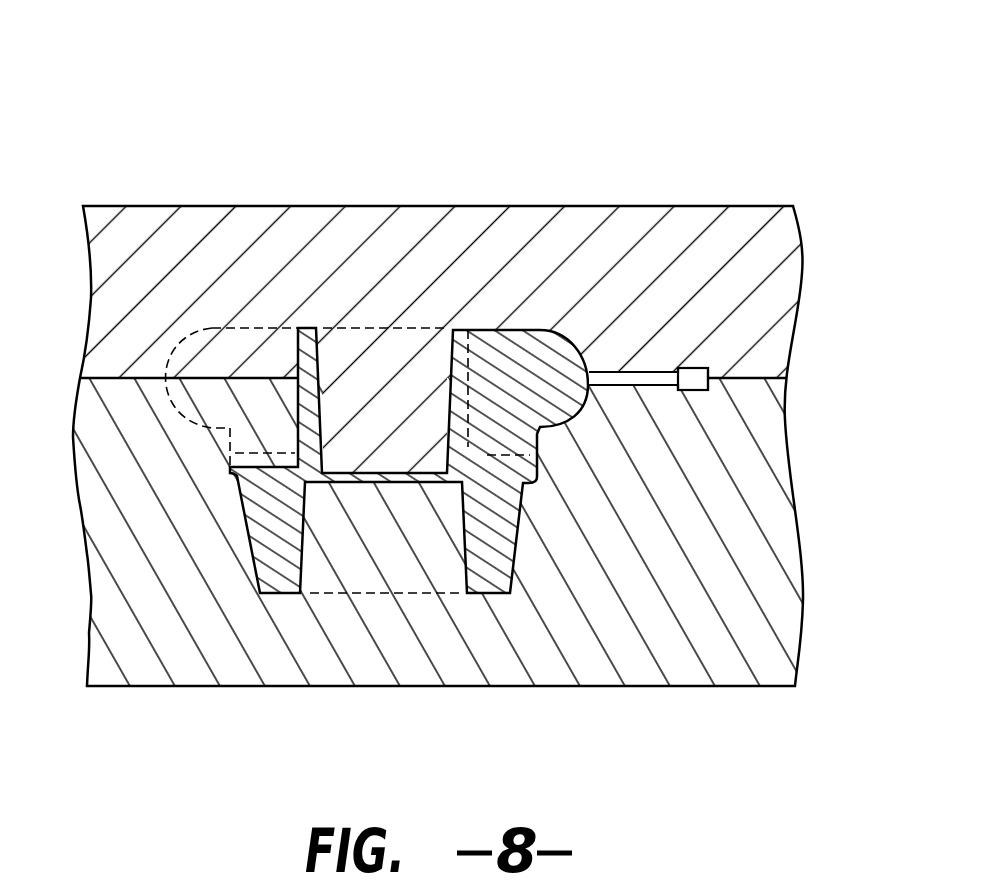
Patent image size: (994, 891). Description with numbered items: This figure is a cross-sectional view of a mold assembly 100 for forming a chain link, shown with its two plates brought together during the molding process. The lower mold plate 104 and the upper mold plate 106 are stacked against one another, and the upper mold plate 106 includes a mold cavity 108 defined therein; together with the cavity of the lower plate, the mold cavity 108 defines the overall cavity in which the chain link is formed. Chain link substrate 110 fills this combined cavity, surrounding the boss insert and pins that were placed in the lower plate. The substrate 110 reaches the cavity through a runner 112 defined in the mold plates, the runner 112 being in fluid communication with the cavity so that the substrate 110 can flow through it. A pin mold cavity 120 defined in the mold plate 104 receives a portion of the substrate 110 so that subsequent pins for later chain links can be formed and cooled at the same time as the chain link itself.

The mold assembly 100 is at (406, 394).
The lower mold plate 104 is at (118, 483).
The upper mold plate 106 is at (122, 298).
The mold cavity 108 is at (240, 350).
The chain link substrate 110 is at (605, 377).
The runner 112 is at (673, 375).
The pin mold cavity 120 is at (700, 398).